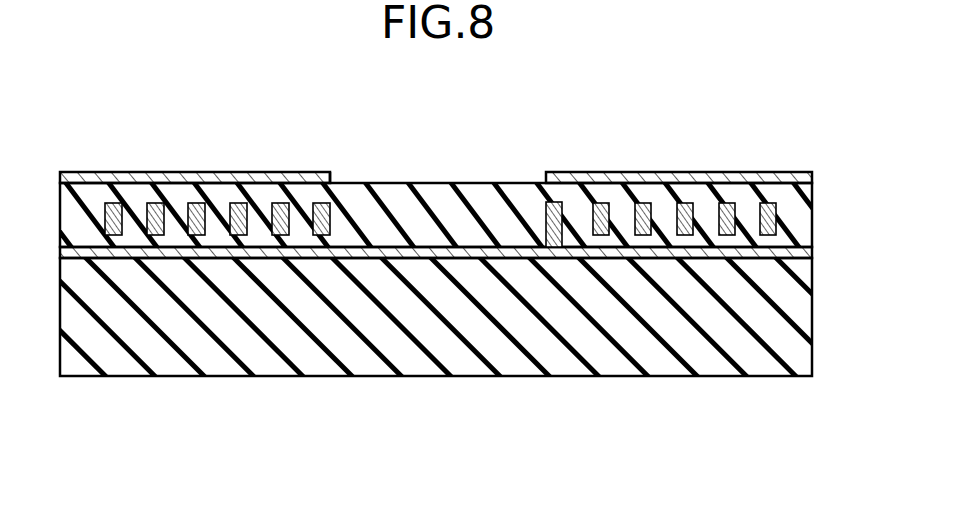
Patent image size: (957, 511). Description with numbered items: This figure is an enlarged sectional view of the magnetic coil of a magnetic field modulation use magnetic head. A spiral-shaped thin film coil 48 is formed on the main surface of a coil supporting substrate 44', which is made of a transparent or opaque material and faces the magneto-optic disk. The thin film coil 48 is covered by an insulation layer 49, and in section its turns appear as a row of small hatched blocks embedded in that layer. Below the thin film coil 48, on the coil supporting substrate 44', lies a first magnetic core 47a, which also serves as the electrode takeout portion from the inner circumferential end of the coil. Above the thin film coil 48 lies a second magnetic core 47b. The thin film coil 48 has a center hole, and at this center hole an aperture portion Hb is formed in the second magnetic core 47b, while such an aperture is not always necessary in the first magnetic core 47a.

The coil supporting substrate 44' is at (478, 336).
The first magnetic core 47a is at (402, 258).
The second magnetic core 47b is at (168, 172).
The thin film coil 48 is at (238, 205).
The insulation layer 49 is at (78, 222).
The aperture portion Hb is at (331, 172).